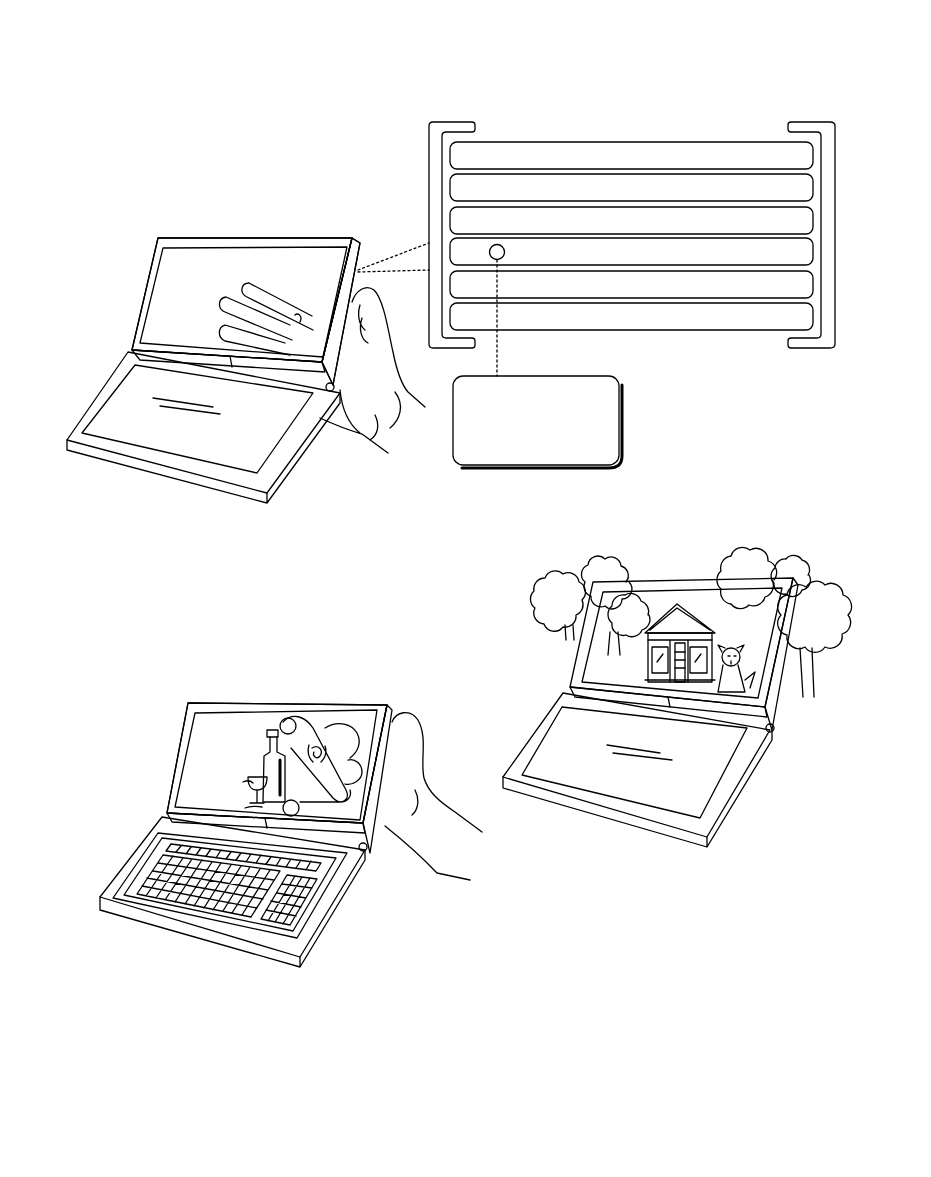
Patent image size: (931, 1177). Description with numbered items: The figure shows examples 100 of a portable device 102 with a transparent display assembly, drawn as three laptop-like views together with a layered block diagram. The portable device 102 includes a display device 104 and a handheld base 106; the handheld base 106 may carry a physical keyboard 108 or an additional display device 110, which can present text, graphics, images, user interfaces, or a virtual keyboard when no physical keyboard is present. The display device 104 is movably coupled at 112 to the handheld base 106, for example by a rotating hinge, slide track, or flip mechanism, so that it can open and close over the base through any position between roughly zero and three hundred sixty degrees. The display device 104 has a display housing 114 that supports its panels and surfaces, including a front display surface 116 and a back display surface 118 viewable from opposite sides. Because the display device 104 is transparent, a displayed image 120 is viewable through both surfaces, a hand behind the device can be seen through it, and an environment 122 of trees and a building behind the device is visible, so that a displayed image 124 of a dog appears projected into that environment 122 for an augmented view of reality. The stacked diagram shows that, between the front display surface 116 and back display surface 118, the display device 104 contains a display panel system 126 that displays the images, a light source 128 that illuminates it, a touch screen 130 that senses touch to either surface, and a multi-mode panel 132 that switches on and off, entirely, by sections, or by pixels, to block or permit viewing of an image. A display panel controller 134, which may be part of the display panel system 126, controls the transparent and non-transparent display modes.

The examples 100 is at (716, 66).
The portable device 102 is at (330, 475).
The display device 104 is at (307, 237).
The handheld base 106 is at (187, 490).
The physical keyboard 108 is at (253, 927).
The additional display device 110 is at (163, 427).
The movable coupling 112 is at (157, 360).
The display housing 114 is at (150, 293).
The front display surface 116 is at (280, 270).
The back display surface 118 is at (212, 270).
The displayed image 120 is at (267, 733).
The environment 122 is at (767, 558).
The displayed image of the dog 124 is at (740, 690).
The display panel system 126 is at (631, 251).
The light source 128 is at (631, 220).
The touch screen 130 is at (631, 284).
The multi-mode panel 132 is at (631, 187).
The display panel controller 134 is at (537, 364).